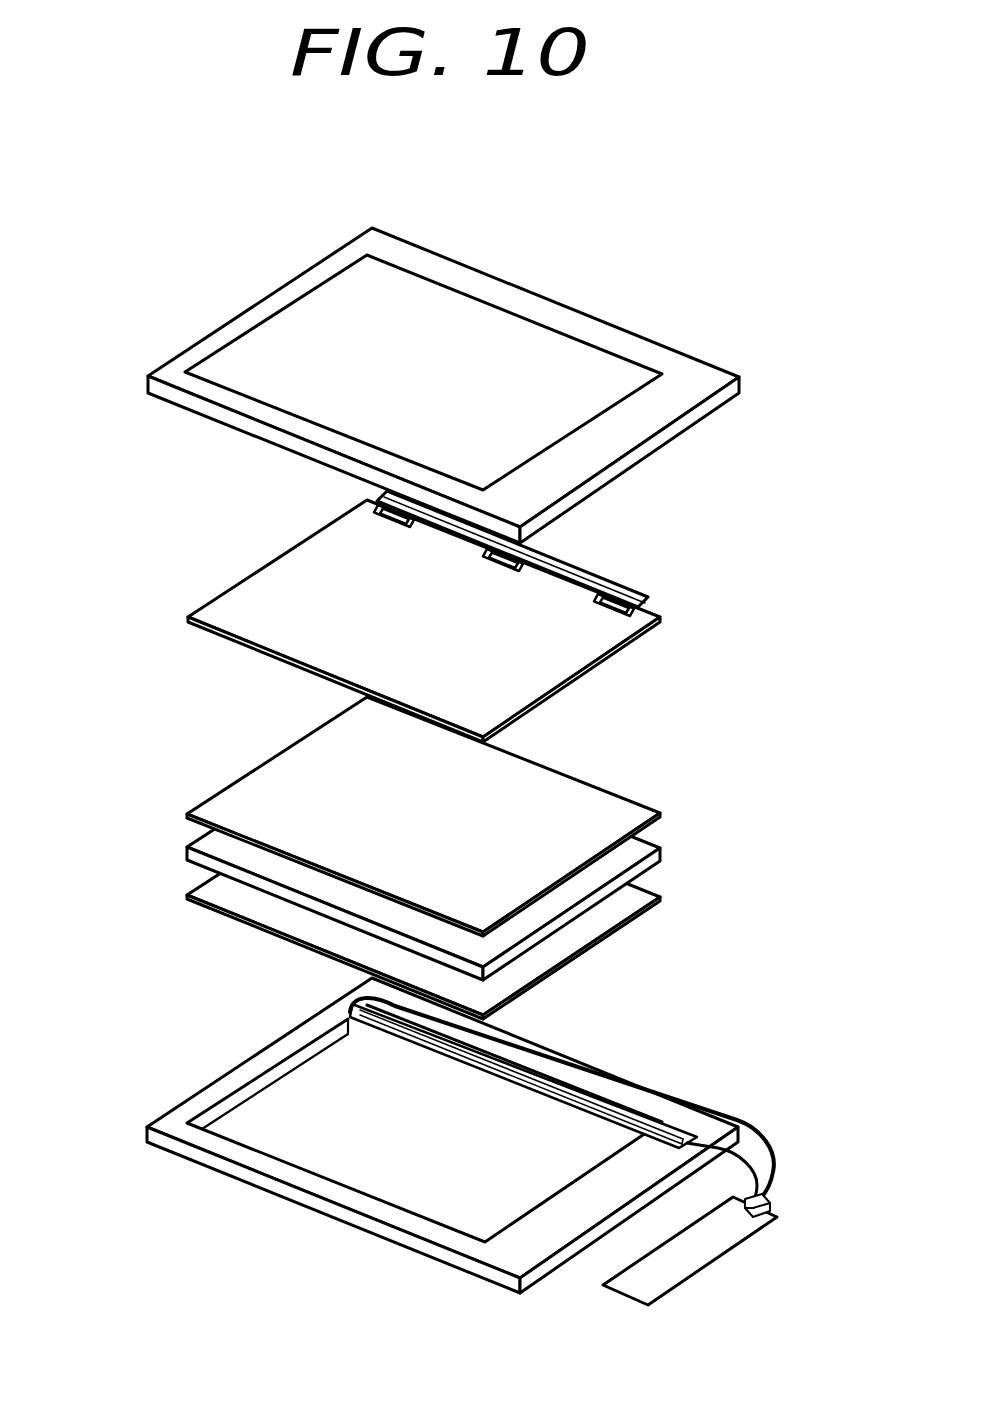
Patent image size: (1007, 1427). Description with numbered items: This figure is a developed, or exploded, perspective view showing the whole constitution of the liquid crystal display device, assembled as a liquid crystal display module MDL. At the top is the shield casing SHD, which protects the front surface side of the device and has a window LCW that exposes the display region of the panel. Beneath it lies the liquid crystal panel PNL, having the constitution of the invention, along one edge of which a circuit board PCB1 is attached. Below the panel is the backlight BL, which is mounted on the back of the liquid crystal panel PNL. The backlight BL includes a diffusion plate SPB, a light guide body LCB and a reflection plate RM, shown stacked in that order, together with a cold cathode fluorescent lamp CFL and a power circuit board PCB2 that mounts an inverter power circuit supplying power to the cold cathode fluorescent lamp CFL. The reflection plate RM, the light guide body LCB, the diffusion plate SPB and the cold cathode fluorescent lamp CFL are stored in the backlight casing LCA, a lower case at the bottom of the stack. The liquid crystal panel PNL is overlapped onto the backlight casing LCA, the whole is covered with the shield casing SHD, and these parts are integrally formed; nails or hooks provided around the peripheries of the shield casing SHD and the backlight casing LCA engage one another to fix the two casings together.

The liquid crystal display module MDL is at (135, 235).
The shield casing SHD is at (443, 382).
The window LCW is at (545, 430).
The circuit board PCB1 is at (635, 590).
The liquid crystal panel PNL is at (588, 692).
The diffusion plate SPB is at (593, 797).
The light guide body LCB is at (625, 860).
The reflection plate RM is at (607, 925).
The backlight casing LCA is at (277, 1052).
The cold cathode fluorescent lamp CFL is at (542, 1087).
The backlight BL is at (499, 1135).
The power circuit board PCB2 is at (718, 1247).